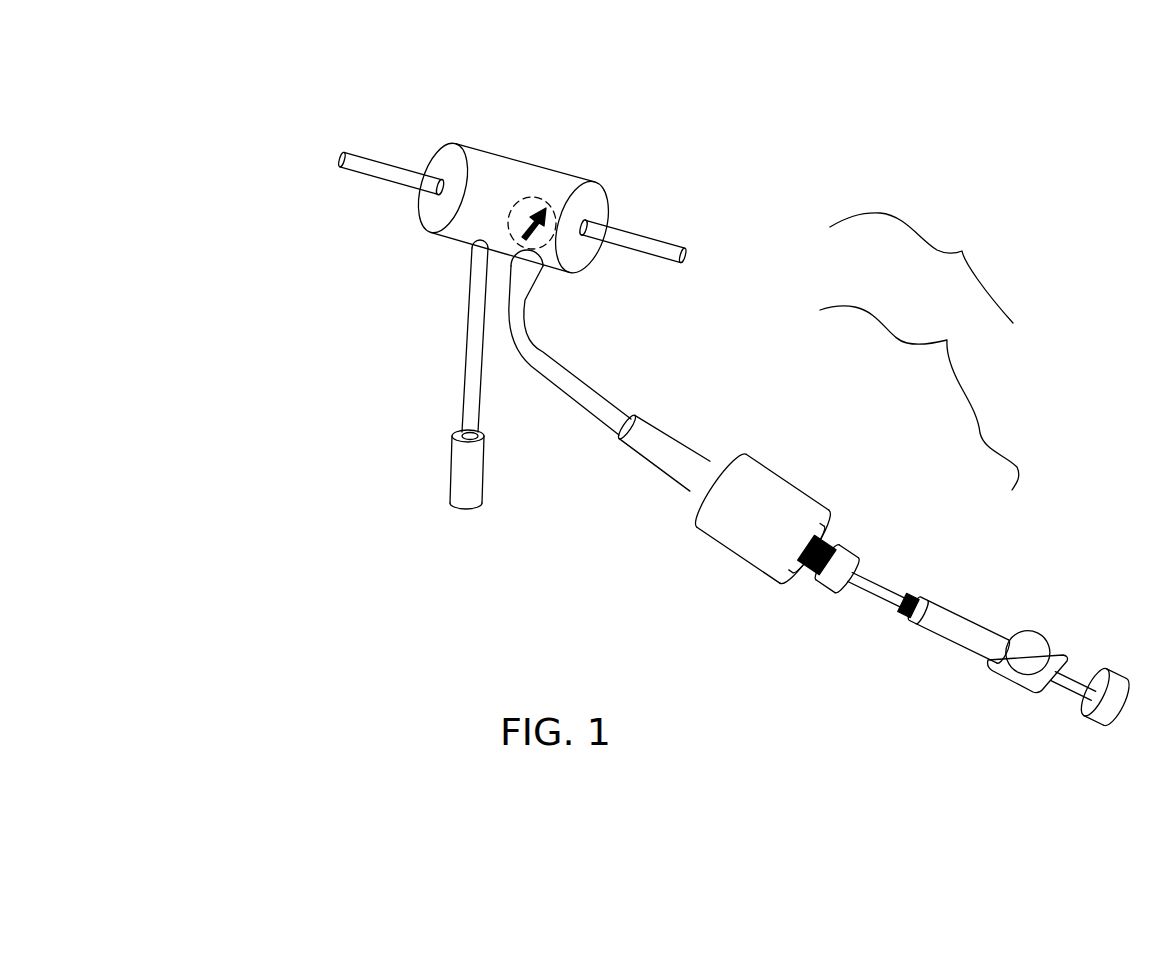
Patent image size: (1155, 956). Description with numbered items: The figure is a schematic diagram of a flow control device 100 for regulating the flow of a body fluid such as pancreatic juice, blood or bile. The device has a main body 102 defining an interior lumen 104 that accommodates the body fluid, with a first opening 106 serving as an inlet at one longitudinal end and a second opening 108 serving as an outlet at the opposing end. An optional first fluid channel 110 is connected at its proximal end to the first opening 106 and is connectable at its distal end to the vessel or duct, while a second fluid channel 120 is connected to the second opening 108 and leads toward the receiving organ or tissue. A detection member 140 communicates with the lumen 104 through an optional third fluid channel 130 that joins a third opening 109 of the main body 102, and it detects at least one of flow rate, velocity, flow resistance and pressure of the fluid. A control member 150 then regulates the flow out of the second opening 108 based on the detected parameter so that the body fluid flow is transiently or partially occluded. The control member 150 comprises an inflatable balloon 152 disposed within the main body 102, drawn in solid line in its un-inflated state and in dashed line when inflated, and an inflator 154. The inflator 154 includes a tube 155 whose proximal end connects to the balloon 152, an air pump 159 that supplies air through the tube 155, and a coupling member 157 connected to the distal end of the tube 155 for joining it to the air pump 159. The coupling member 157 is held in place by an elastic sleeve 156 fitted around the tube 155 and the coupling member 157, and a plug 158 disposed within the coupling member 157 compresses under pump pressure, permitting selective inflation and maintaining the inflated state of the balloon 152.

The flow control device 100 is at (240, 52).
The main body 102 is at (512, 208).
The interior lumen 104 is at (490, 170).
The first opening 106 is at (442, 188).
The second opening 108 is at (582, 226).
The third opening 109 is at (480, 248).
The first fluid channel 110 is at (391, 173).
The second fluid channel 120 is at (633, 241).
The third fluid channel 130 is at (468, 385).
The detection member 140 is at (467, 488).
The control member 150 is at (925, 268).
The inflatable balloon 152 is at (523, 272).
The inflator 154 is at (919, 398).
The tube 155 is at (662, 450).
The elastic sleeve 156 is at (763, 519).
The coupling member 157 is at (837, 568).
The plug 158 is at (816, 554).
The air pump 159 is at (972, 632).